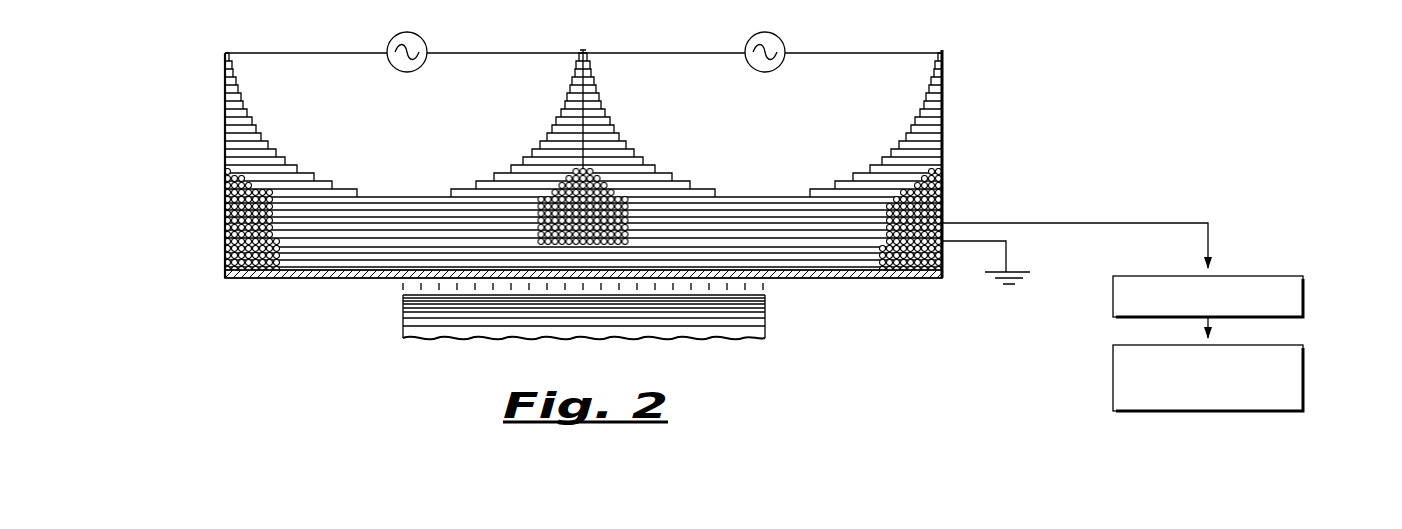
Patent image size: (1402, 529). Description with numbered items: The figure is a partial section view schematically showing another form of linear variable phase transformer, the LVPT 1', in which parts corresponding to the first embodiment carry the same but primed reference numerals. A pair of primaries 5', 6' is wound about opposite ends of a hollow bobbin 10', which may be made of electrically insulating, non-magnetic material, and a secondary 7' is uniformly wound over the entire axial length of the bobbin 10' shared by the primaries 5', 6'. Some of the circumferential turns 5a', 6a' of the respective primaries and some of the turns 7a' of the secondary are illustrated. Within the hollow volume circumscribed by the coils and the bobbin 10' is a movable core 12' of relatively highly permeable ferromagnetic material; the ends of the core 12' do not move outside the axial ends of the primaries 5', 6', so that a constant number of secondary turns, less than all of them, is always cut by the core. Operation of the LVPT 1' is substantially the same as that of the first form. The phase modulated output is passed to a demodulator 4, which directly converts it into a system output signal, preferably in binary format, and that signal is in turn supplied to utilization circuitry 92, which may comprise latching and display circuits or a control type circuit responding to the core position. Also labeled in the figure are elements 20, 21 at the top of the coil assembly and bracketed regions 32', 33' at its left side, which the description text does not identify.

The linear variable phase transformer 1' is at (567, 171).
The primary 5' is at (477, 125).
The primary 6' is at (678, 123).
The circumferential turns of primary 5a' is at (269, 199).
The circumferential turns of primary 6a' is at (605, 185).
The secondary 7' is at (583, 294).
The circumferential turns of secondary 7a' is at (219, 263).
The bobbin 10' is at (583, 300).
The core 12' is at (561, 322).
The oscillator 20 is at (421, 38).
The oscillator 21 is at (779, 38).
The layered region 32' is at (509, 226).
The stepped electrode region 33' is at (509, 123).
The demodulator 4 is at (1304, 296).
The utilization circuitry 92 is at (1304, 389).